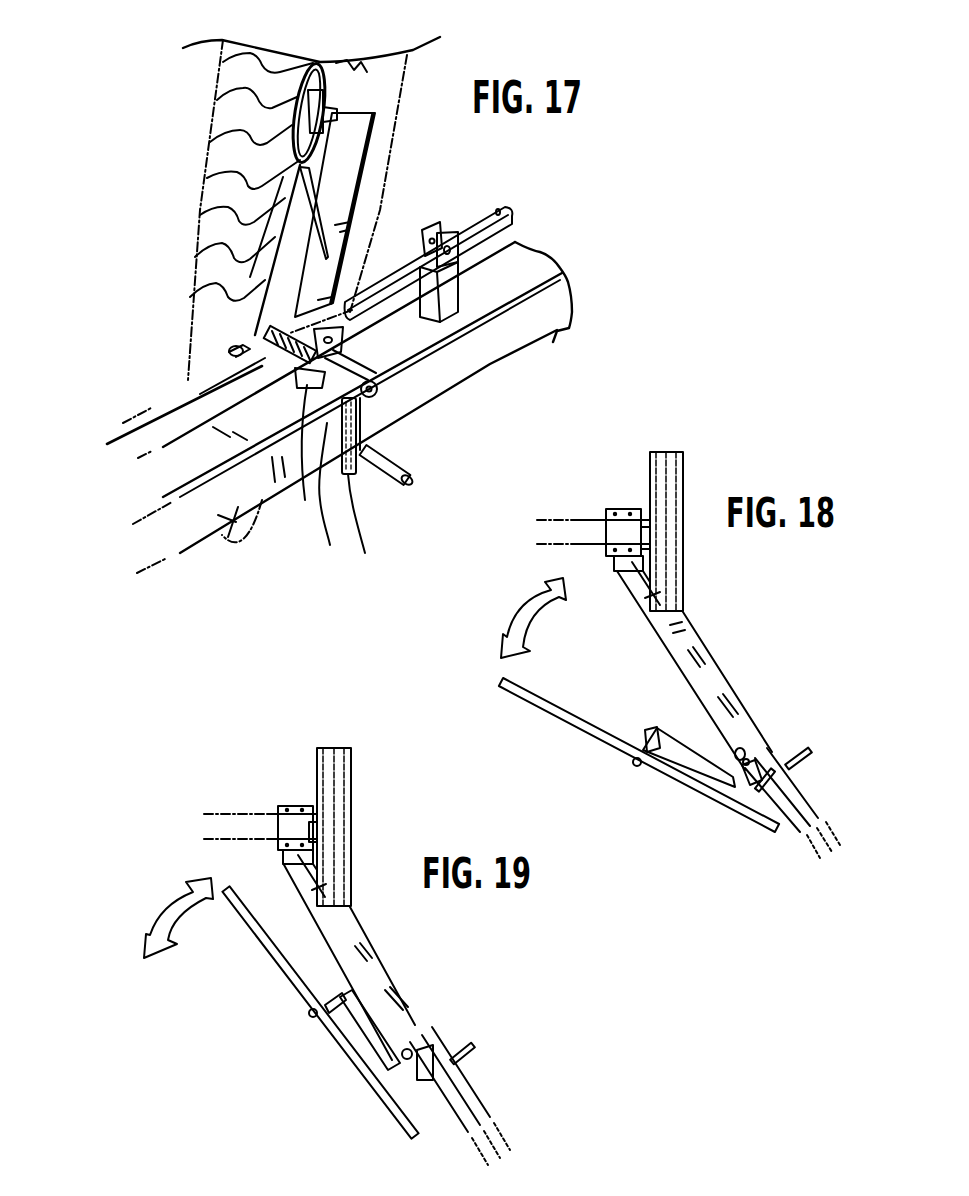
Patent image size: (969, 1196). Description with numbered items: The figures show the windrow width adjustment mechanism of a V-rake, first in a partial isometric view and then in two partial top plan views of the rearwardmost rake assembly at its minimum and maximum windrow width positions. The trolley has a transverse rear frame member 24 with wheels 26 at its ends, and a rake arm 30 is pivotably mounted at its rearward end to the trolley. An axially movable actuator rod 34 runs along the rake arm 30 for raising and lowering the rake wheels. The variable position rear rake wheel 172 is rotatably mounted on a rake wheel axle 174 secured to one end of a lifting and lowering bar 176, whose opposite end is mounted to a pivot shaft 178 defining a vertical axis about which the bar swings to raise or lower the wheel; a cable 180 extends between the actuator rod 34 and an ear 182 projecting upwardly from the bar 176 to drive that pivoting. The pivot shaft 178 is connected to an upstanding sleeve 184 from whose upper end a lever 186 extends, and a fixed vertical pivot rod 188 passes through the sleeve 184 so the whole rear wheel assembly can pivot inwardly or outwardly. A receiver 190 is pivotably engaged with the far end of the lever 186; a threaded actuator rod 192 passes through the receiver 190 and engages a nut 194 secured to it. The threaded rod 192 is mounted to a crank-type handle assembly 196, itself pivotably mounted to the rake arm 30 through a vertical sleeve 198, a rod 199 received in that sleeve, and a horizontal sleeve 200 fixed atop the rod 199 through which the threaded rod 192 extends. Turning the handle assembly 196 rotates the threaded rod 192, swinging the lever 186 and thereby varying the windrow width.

In FIG. 18, the rear frame member 24 is at (586, 518).
In FIG. 19, the rear frame member 24 is at (262, 814).
In FIG. 18, the wheels 26 is at (683, 487).
In FIG. 19, the wheels 26 is at (348, 769).
In FIG. 17, the rake arm 30 is at (560, 347).
In FIG. 18, the rake arm 30 is at (706, 647).
In FIG. 19, the rake arm 30 is at (380, 952).
In FIG. 17, the actuator rod 34 is at (176, 397).
In FIG. 17, the rear rake wheel 172 is at (214, 124).
In FIG. 18, the rear rake wheel 172 is at (563, 722).
In FIG. 19, the rear rake wheel 172 is at (266, 946).
In FIG. 17, the rake wheel axle 174 is at (330, 97).
In FIG. 18, the rake wheel axle 174 is at (643, 743).
In FIG. 19, the rake wheel axle 174 is at (327, 1005).
In FIG. 17, the lifting and lowering bar 176 is at (357, 196).
In FIG. 18, the lifting and lowering bar 176 is at (700, 745).
In FIG. 19, the lifting and lowering bar 176 is at (363, 1037).
In FIG. 18, the pivot shaft 178 is at (780, 753).
In FIG. 19, the pivot shaft 178 is at (443, 1043).
In FIG. 17, the cable 180 is at (262, 303).
In FIG. 17, the ear 182 is at (293, 187).
In FIG. 17, the sleeve 184 is at (439, 272).
In FIG. 18, the sleeve 184 is at (740, 748).
In FIG. 18, the lever 186 is at (750, 803).
In FIG. 17, the pivot rod 188 is at (443, 345).
In FIG. 18, the pivot rod 188 is at (792, 803).
In FIG. 19, the pivot rod 188 is at (417, 1023).
In FIG. 17, the receiver 190 is at (100, 464).
In FIG. 17, the threaded actuator rod 192 is at (228, 348).
In FIG. 17, the nut 194 is at (325, 472).
In FIG. 17, the handle assembly 196 is at (386, 423).
In FIG. 18, the handle assembly 196 is at (796, 771).
In FIG. 19, the handle assembly 196 is at (470, 1067).
In FIG. 17, the vertical sleeve 198 is at (334, 496).
In FIG. 17, the rod 199 is at (387, 514).
In FIG. 17, the horizontal sleeve 200 is at (345, 340).